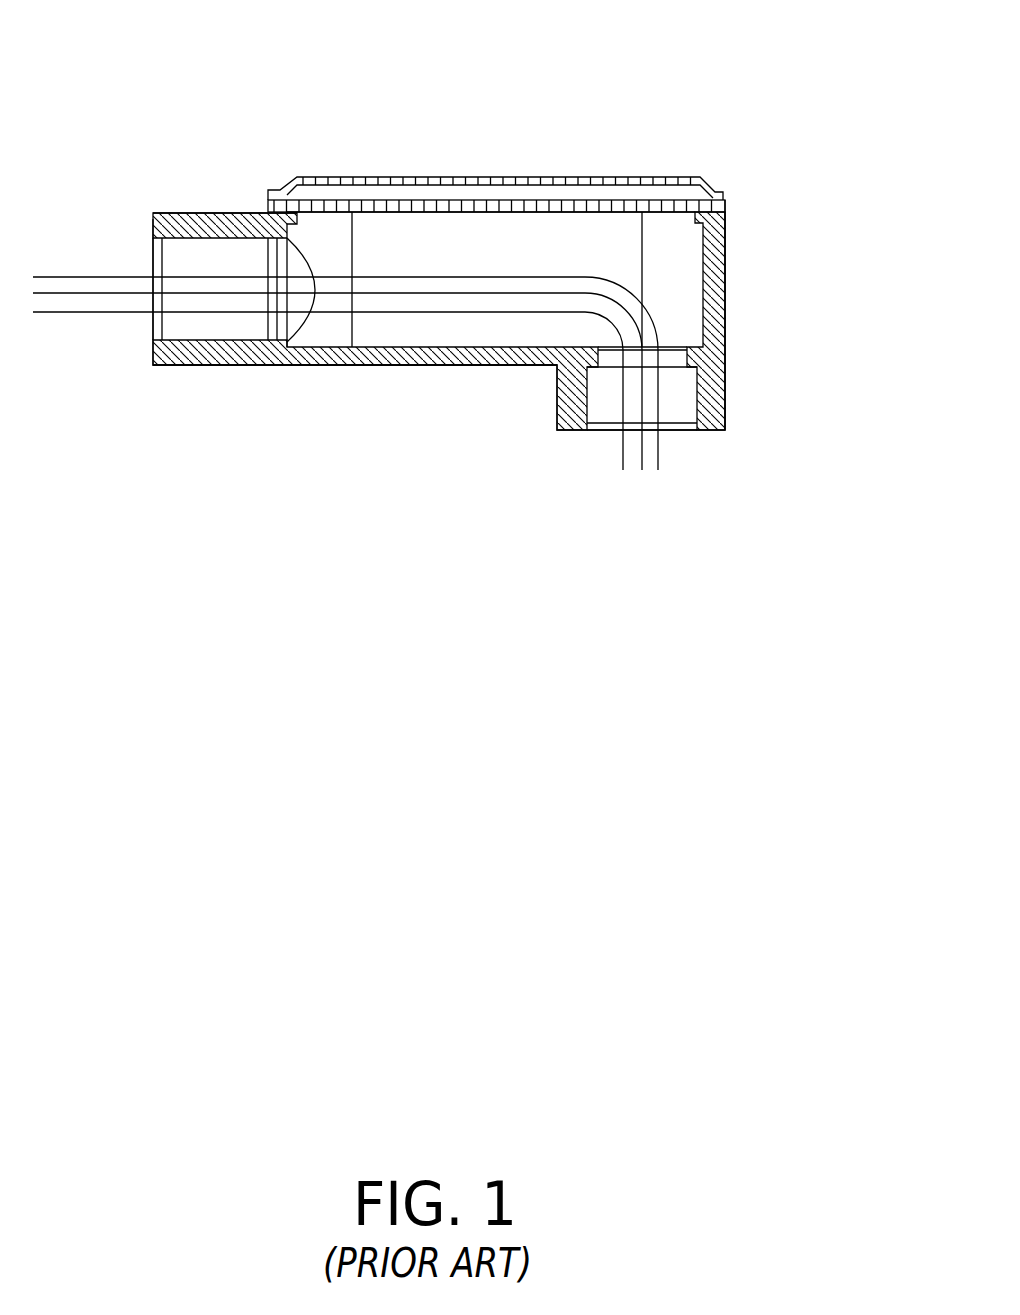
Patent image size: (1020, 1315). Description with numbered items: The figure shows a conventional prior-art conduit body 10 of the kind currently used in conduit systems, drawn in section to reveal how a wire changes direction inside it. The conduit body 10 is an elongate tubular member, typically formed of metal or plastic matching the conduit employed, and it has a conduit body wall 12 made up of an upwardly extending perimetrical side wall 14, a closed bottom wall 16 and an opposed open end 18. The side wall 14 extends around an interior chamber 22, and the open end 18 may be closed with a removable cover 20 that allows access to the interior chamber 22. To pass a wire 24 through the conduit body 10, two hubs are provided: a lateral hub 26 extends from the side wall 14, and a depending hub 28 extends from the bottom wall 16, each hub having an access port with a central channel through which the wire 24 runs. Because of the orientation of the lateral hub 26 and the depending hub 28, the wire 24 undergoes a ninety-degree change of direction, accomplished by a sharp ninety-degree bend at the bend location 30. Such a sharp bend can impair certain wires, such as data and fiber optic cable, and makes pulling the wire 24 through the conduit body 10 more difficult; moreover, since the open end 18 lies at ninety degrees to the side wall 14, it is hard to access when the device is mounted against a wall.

The conduit body 10 is at (770, 127).
The conduit body wall 12 is at (680, 243).
The perimetrical side wall 14 is at (713, 315).
The bottom wall 16 is at (455, 358).
The open end 18 is at (432, 193).
The removable cover 20 is at (533, 182).
The interior chamber 22 is at (372, 237).
The wire 24 is at (92, 277).
The lateral hub 26 is at (225, 335).
The depending hub 28 is at (677, 403).
The bend location 30 is at (612, 358).